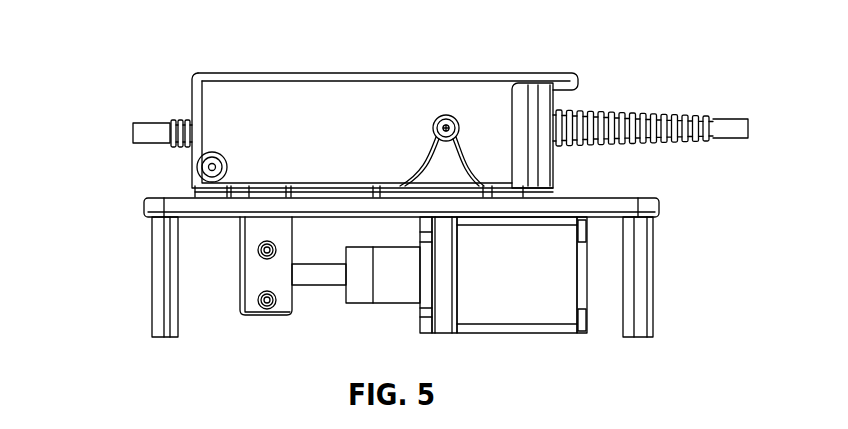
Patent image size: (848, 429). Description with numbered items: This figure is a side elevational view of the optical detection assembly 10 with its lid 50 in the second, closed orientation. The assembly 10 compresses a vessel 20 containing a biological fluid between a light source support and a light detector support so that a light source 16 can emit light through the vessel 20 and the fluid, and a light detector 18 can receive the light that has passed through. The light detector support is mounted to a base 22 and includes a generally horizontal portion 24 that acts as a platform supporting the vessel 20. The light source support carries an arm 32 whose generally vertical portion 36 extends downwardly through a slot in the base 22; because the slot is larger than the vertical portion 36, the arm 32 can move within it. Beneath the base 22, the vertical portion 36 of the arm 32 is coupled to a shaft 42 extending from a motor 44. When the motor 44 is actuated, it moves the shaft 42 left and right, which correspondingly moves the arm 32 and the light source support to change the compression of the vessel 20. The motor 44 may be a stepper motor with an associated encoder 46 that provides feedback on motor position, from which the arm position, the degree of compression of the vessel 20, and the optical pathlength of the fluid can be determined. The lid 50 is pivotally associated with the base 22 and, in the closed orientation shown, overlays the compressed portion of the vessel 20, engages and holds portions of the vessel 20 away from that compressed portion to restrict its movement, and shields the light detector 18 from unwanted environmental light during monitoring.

The optical detection assembly 10 is at (106, 56).
The light source 16 is at (150, 136).
The light detector 18 is at (696, 118).
The vessel 20 is at (441, 117).
The base 22 is at (627, 201).
The generally horizontal portion 24 is at (450, 168).
The arm 32 is at (236, 295).
The generally vertical portion 36 is at (253, 277).
The shaft 42 is at (318, 288).
The motor 44 is at (532, 276).
The encoder 46 is at (607, 321).
The lid 50 is at (321, 136).